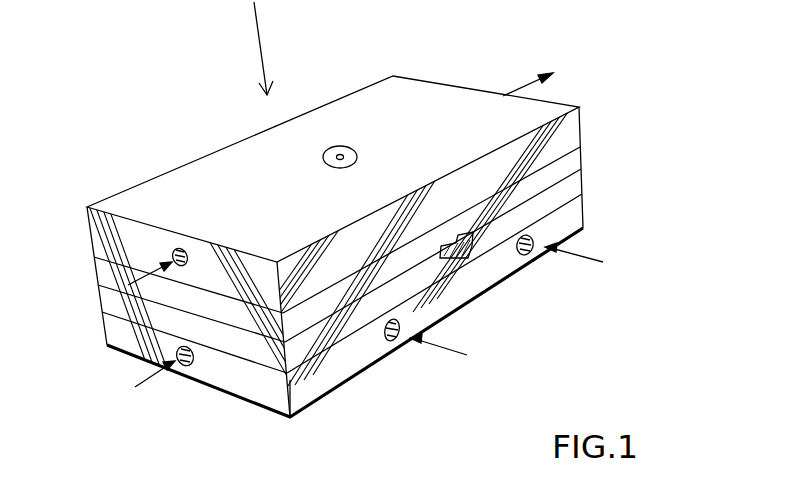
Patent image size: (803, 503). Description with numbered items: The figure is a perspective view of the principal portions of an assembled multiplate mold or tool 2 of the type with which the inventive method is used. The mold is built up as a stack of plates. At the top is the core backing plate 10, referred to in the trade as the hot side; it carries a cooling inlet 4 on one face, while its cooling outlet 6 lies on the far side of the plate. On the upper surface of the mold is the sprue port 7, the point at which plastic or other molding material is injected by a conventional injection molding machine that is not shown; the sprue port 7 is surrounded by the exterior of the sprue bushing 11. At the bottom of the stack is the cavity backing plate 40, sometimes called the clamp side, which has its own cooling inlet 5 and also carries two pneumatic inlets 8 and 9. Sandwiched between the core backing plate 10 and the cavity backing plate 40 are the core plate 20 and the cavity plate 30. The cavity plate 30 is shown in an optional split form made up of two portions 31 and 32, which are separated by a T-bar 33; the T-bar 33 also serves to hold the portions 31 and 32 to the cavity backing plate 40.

The multiplate mold or tool 2 is at (162, 107).
The cooling inlet 4 is at (182, 252).
The cooling inlet 5 is at (187, 370).
The cooling outlet 6 is at (477, 90).
The sprue port 7 is at (340, 150).
The pneumatic inlet 8 is at (396, 343).
The pneumatic inlet 9 is at (528, 255).
The core backing plate 10 is at (93, 237).
The sprue bushing 11 is at (353, 147).
The core plate 20 is at (100, 268).
The cavity plate 30 is at (265, 350).
The split form portion of cavity plate 31 is at (322, 340).
The split form portion of cavity plate 32 is at (598, 170).
The T-bar 33 is at (460, 267).
The cavity backing plate 40 is at (274, 412).